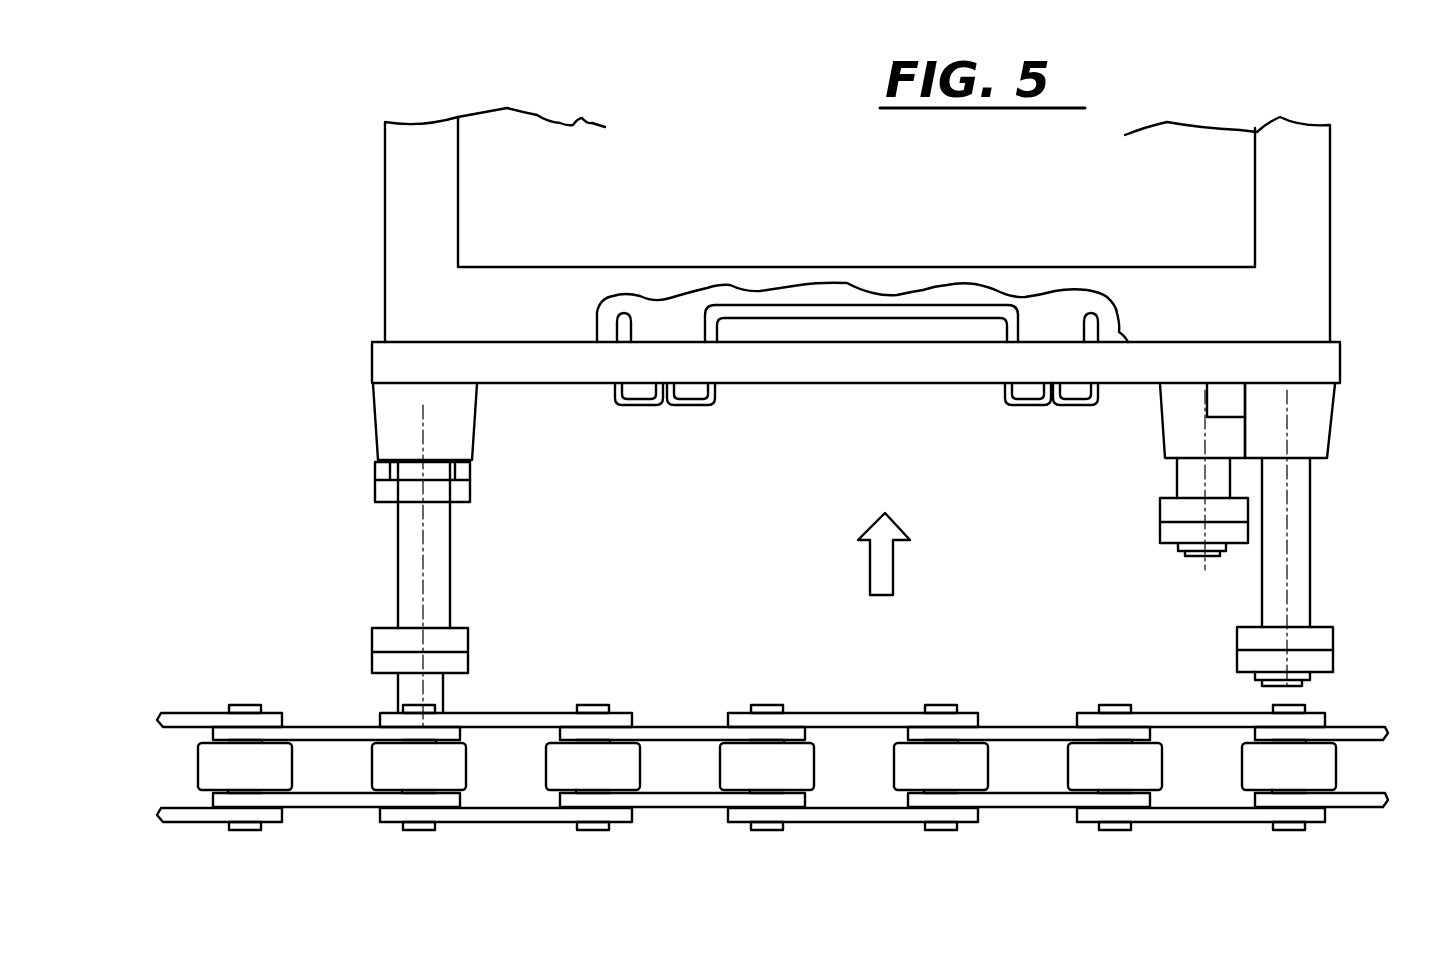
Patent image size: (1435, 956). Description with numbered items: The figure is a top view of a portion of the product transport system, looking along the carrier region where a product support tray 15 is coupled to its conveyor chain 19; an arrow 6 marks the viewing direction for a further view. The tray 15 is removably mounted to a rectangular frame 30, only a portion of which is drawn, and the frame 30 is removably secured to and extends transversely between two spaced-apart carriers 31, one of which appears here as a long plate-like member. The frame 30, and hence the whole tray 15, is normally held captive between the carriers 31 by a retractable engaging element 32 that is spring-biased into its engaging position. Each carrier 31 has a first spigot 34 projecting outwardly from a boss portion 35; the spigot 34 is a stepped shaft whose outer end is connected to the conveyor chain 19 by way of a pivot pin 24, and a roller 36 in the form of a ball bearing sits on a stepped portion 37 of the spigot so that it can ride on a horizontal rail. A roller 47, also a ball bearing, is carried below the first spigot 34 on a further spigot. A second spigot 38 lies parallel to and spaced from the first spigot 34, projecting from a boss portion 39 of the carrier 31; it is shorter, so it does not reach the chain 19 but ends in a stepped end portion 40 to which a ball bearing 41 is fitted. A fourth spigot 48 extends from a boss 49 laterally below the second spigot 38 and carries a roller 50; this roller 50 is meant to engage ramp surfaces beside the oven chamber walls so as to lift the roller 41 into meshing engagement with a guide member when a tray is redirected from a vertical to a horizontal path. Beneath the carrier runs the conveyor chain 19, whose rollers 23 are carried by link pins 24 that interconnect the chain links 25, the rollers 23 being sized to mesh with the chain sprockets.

The product support tray 15 is at (580, 80).
The rectangular frame 30 is at (442, 213).
The carrier 31 is at (587, 397).
The retractable engaging element 32 is at (917, 312).
The boss portion 35 is at (392, 430).
The roller 47 is at (478, 483).
The first spigot 34 is at (438, 548).
The roller 36 is at (475, 647).
The stepped portion 37 is at (435, 698).
The boss 49 is at (1173, 410).
The fourth spigot 48 is at (1192, 480).
The roller 50 is at (1180, 530).
The boss portion 39 is at (1317, 428).
The second spigot 38 is at (1297, 567).
The ball bearing 41 is at (1227, 645).
The stepped end portion 40 is at (1340, 657).
The view direction arrow 6 is at (863, 555).
The conveyor chain 19 is at (693, 837).
The roller 23 is at (990, 830).
The link pin 24 is at (805, 850).
The chain link 25 is at (1182, 848).